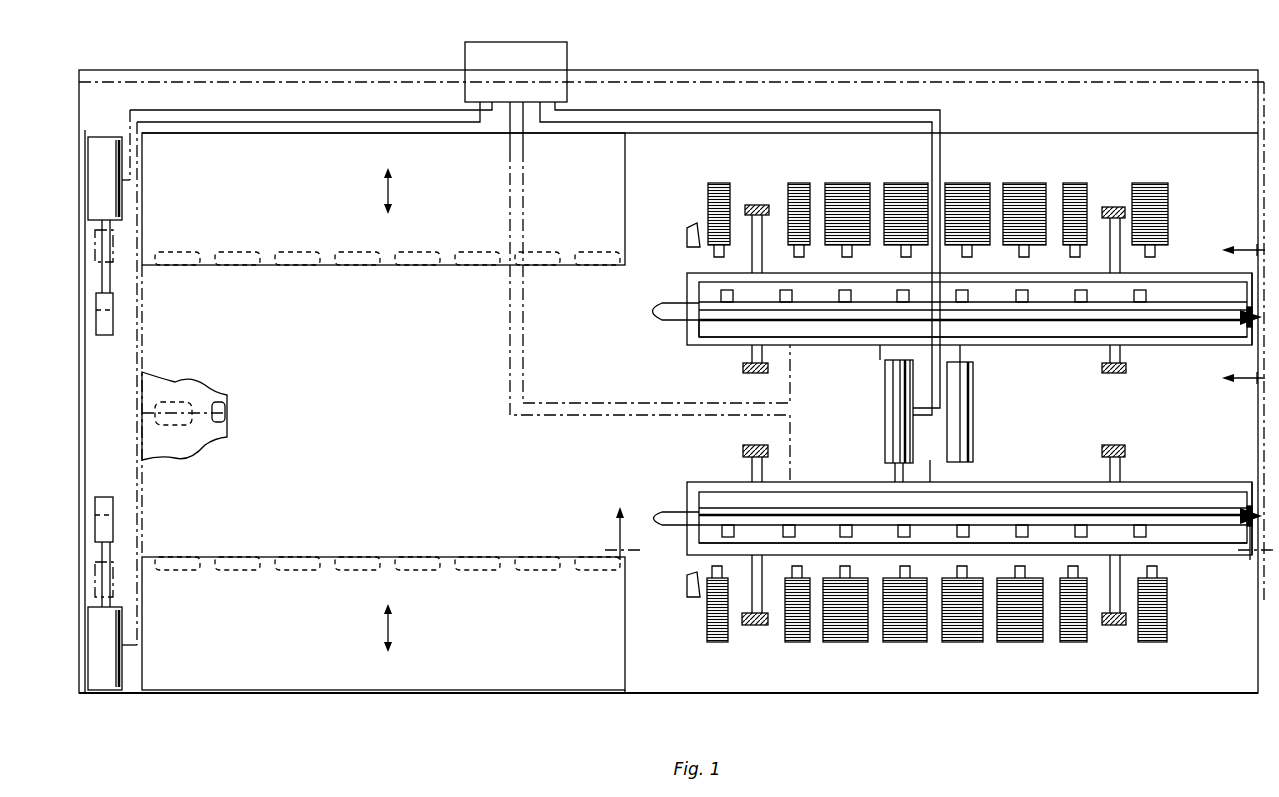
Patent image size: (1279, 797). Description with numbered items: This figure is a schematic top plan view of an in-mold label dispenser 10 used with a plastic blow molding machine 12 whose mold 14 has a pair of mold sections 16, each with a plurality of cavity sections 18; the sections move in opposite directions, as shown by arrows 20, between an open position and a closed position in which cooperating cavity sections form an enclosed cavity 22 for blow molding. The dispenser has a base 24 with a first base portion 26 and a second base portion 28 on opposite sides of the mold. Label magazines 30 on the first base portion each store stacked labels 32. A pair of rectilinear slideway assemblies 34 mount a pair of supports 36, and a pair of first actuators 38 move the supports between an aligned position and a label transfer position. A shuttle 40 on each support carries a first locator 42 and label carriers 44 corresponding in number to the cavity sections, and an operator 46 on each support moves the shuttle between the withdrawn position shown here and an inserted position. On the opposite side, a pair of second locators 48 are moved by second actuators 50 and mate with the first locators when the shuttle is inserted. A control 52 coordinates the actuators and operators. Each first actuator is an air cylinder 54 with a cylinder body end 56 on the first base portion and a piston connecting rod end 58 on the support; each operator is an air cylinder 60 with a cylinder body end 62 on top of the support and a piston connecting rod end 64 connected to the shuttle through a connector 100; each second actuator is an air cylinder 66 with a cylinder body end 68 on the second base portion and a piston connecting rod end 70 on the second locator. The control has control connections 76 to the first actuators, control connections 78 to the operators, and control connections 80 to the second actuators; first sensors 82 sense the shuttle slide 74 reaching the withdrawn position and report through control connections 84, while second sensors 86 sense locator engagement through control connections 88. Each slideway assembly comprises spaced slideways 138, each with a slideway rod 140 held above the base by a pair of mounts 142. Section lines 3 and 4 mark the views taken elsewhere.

The section line 3 is at (940, 530).
The section line 4 is at (1243, 313).
The in-mold label dispenser 10 is at (767, 66).
The plastic blow molding machine 12 is at (582, 133).
The mold 14 is at (625, 133).
The mold sections 16 is at (626, 140).
The cavity sections 18 is at (230, 256).
The arrows 20 is at (398, 190).
The enclosed cavity 22 is at (195, 413).
The base 24 is at (770, 693).
The first base portion 26 is at (890, 688).
The second base portion 28 is at (128, 693).
The label magazines 30 is at (728, 183).
The labels 32 is at (718, 195).
The rectilinear slideway assemblies 34 is at (735, 368).
The supports 36 is at (685, 240).
The first actuators 38 is at (757, 240).
The shuttle 40 is at (862, 345).
The first locator 42 is at (648, 308).
The label carriers 44 is at (845, 256).
The operator 46 is at (1152, 345).
The second locators 48 is at (115, 290).
The second actuators 50 is at (124, 188).
The control 52 is at (567, 48).
The air cylinder 54 is at (988, 415).
The cylinder body end 56 is at (975, 438).
The piston connecting rod end 58 is at (965, 352).
The air cylinder 60 is at (880, 345).
The cylinder body end 62 is at (1092, 340).
The piston connecting rod end 64 is at (700, 322).
The air cylinder 66 is at (100, 168).
The cylinder body end 68 is at (113, 137).
The piston connecting rod end 70 is at (98, 272).
The shuttle slide 74 is at (1240, 305).
The control connections 76 is at (694, 122).
The control connections 78 is at (508, 296).
The control connections 80 is at (400, 108).
The first sensors 82 is at (1247, 330).
The control connections 84 is at (1032, 82).
The second sensors 86 is at (97, 308).
The control connections 88 is at (275, 82).
The connector 100 is at (687, 278).
The slideways 138 is at (750, 470).
The slideway rod 140 is at (712, 220).
The mounts 142 is at (748, 203).